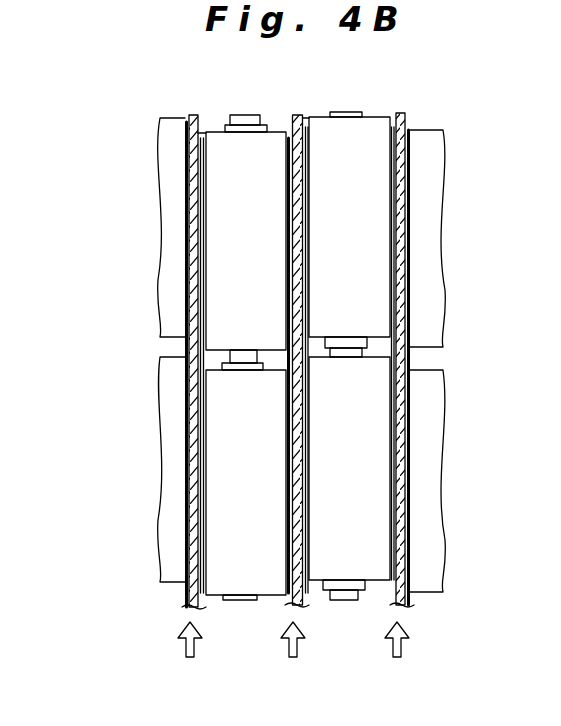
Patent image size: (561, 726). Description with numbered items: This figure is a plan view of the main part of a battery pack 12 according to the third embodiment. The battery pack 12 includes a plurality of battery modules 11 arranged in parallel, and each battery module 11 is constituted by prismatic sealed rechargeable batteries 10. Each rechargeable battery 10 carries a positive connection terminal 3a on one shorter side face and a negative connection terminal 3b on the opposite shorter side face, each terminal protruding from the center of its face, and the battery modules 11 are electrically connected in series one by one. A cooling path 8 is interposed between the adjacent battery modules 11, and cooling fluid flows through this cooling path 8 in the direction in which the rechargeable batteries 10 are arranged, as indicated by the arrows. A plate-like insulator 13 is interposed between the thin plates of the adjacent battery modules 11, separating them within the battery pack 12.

The battery pack 12 is at (120, 168).
The cooling path 8 is at (201, 597).
The plate-like insulator 13 is at (194, 237).
The prismatic sealed rechargeable battery 10 is at (262, 258).
The positive connection terminal 3a is at (346, 114).
The negative connection terminal 3b is at (249, 117).
The battery module 11 is at (217, 122).